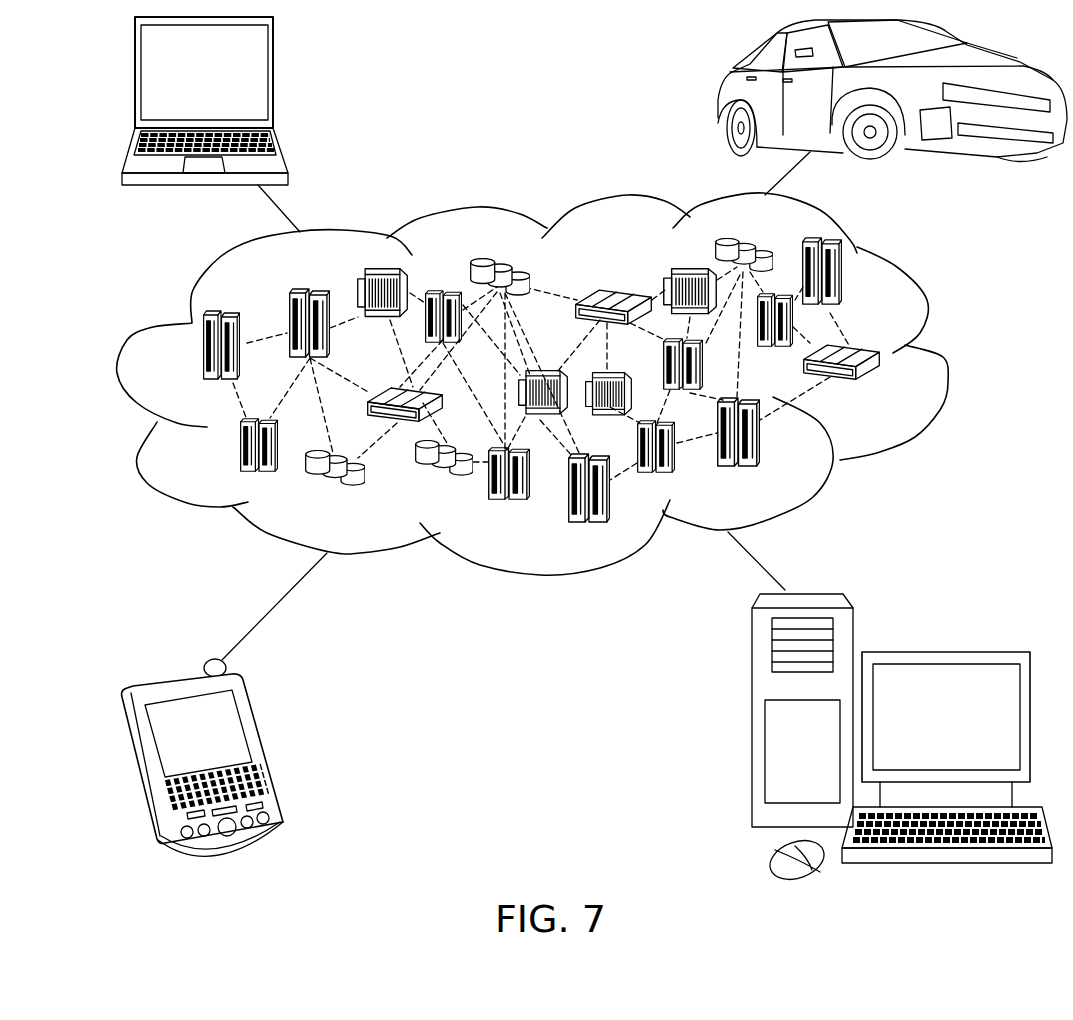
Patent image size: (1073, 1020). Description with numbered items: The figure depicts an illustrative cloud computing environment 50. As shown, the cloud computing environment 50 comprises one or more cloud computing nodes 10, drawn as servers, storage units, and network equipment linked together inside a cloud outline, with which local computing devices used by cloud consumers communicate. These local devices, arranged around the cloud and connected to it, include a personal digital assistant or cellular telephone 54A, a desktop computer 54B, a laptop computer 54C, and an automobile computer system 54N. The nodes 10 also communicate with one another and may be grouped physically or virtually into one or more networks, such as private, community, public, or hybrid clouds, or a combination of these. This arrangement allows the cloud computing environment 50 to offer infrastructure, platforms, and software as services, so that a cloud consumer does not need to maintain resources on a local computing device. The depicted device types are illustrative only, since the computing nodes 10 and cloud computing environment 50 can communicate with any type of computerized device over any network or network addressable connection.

The cloud computing node 10 is at (885, 390).
The cloud computing environment 50 is at (943, 357).
The personal digital assistant or cellular telephone 54A is at (263, 747).
The desktop computer 54B is at (943, 652).
The laptop computer 54C is at (273, 78).
The automobile computer system 54N is at (720, 97).